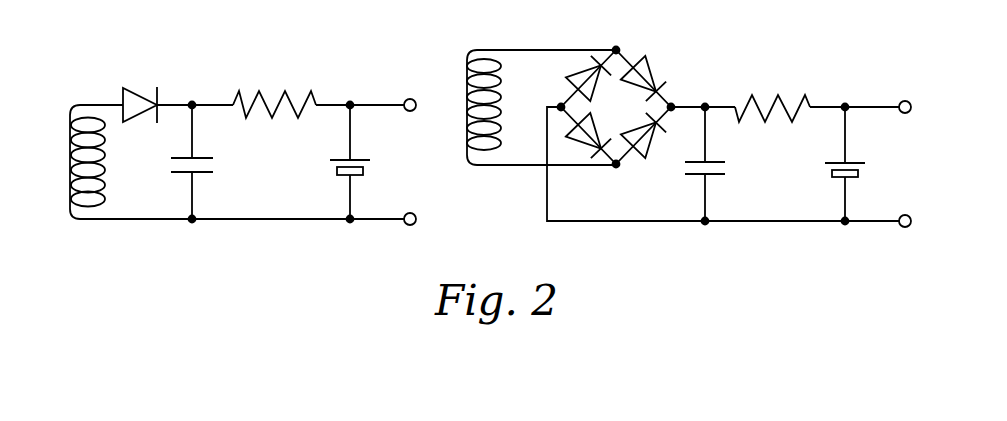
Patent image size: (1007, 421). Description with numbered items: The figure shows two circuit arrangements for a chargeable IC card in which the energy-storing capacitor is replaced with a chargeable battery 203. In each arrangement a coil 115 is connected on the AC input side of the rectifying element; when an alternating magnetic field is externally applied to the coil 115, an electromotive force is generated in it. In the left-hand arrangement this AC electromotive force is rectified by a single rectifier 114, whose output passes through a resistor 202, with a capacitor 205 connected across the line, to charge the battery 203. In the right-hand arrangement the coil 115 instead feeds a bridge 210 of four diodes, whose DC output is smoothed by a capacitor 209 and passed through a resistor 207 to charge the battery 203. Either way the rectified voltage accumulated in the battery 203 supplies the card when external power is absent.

The coil 115 is at (74, 116).
The rectifier 114 is at (140, 90).
The resistor 202 is at (285, 91).
The capacitor 205 is at (213, 172).
The battery 203 is at (357, 176).
The bridge 210 is at (640, 52).
The resistor 207 is at (803, 95).
The capacitor 209 is at (698, 177).